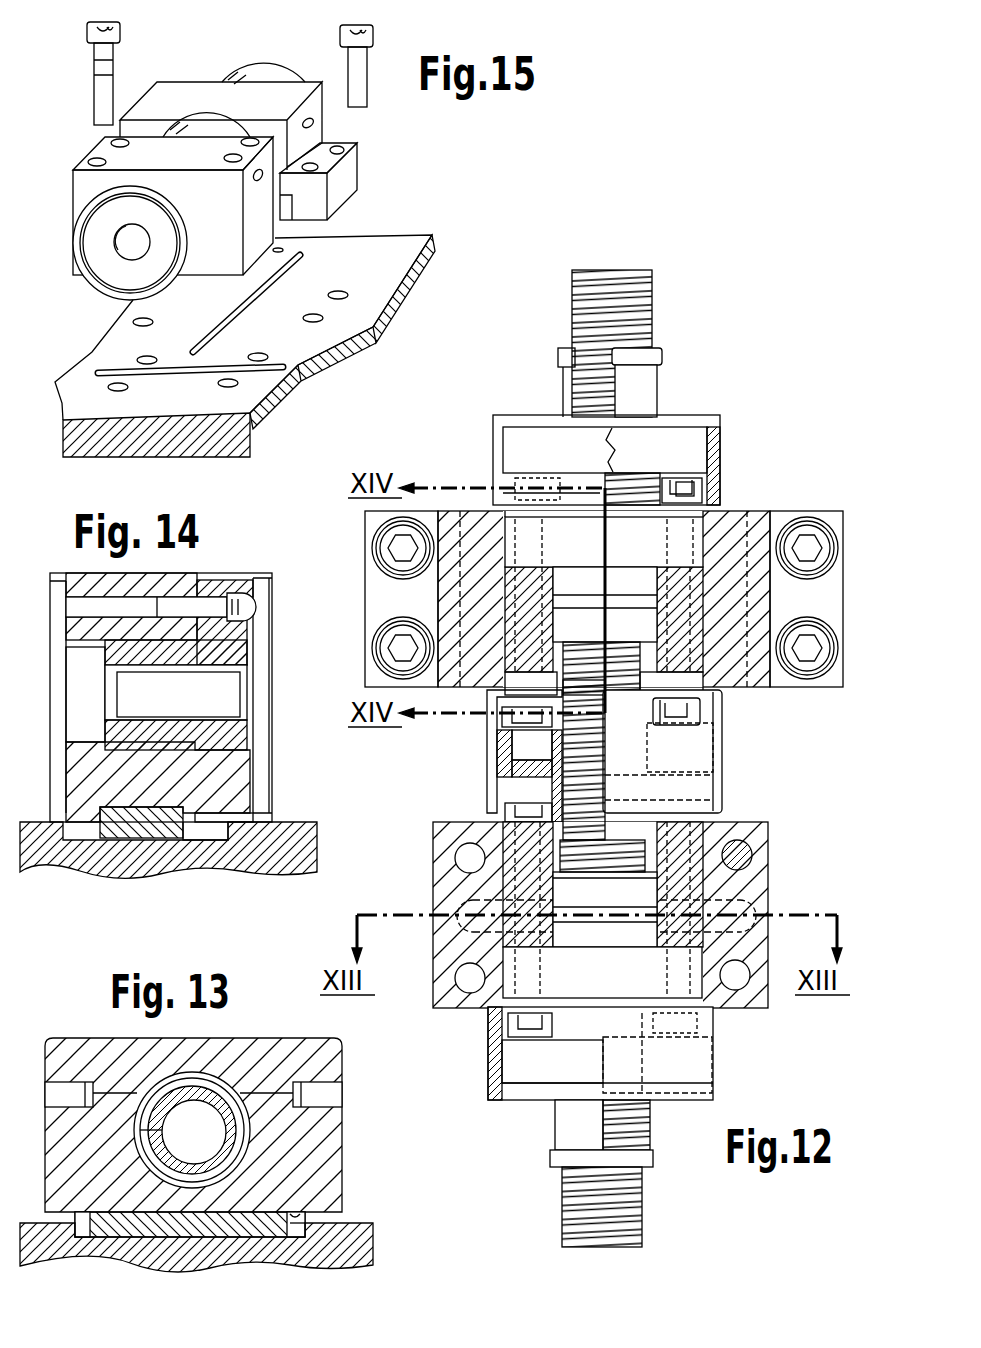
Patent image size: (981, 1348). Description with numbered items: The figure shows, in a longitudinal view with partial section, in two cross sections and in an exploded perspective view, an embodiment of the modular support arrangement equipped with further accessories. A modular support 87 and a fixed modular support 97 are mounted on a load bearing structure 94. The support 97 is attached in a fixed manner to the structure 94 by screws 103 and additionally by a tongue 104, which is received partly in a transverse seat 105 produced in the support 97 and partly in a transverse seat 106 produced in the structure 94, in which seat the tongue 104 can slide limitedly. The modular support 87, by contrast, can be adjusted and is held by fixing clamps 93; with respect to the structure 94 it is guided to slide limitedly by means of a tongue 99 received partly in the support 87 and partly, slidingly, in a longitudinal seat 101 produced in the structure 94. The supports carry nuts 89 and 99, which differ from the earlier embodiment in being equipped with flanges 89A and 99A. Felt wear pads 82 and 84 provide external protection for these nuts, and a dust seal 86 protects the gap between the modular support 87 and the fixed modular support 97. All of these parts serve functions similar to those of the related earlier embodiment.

In FIG. 15, the felt wear pad 82 is at (262, 72).
In FIG. 12, the felt wear pad 82 is at (687, 413).
In FIG. 12, the felt wear pad 84 is at (490, 1070).
In FIG. 15, the dust seal 86 is at (204, 118).
In FIG. 12, the dust seal 86 is at (734, 760).
In FIG. 15, the modular support 87 is at (149, 78).
In FIG. 14, the modular support 87 is at (88, 810).
In FIG. 12, the modular support 87 is at (735, 692).
In FIG. 14, the nut 89 is at (222, 672).
In FIG. 12, the nut 89 is at (652, 582).
In FIG. 14, the flange 89A is at (236, 809).
In FIG. 12, the flange 89A is at (741, 520).
In FIG. 15, the fixing clamp 93 is at (346, 182).
In FIG. 12, the fixing clamp 93 is at (798, 509).
In FIG. 15, the load bearing structure 94 is at (352, 375).
In FIG. 14, the load bearing structure 94 is at (296, 822).
In FIG. 13, the load bearing structure 94 is at (374, 1222).
In FIG. 15, the fixed modular support 97 is at (72, 178).
In FIG. 13, the fixed modular support 97 is at (343, 1139).
In FIG. 12, the fixed modular support 97 is at (430, 864).
In FIG. 14, the nut 99 is at (153, 831).
In FIG. 12, the nut 99 is at (605, 909).
In FIG. 12, the flange 99A is at (700, 985).
In FIG. 15, the longitudinal seat 101 is at (272, 256).
In FIG. 14, the longitudinal seat 101 is at (204, 838).
In FIG. 15, the screw 103 is at (98, 79).
In FIG. 12, the screw 103 is at (753, 853).
In FIG. 13, the tongue 104 is at (300, 1172).
In FIG. 12, the tongue 104 is at (432, 893).
In FIG. 13, the transverse seat 105 is at (304, 1220).
In FIG. 15, the transverse seat 106 is at (176, 374).
In FIG. 13, the transverse seat 106 is at (299, 1232).